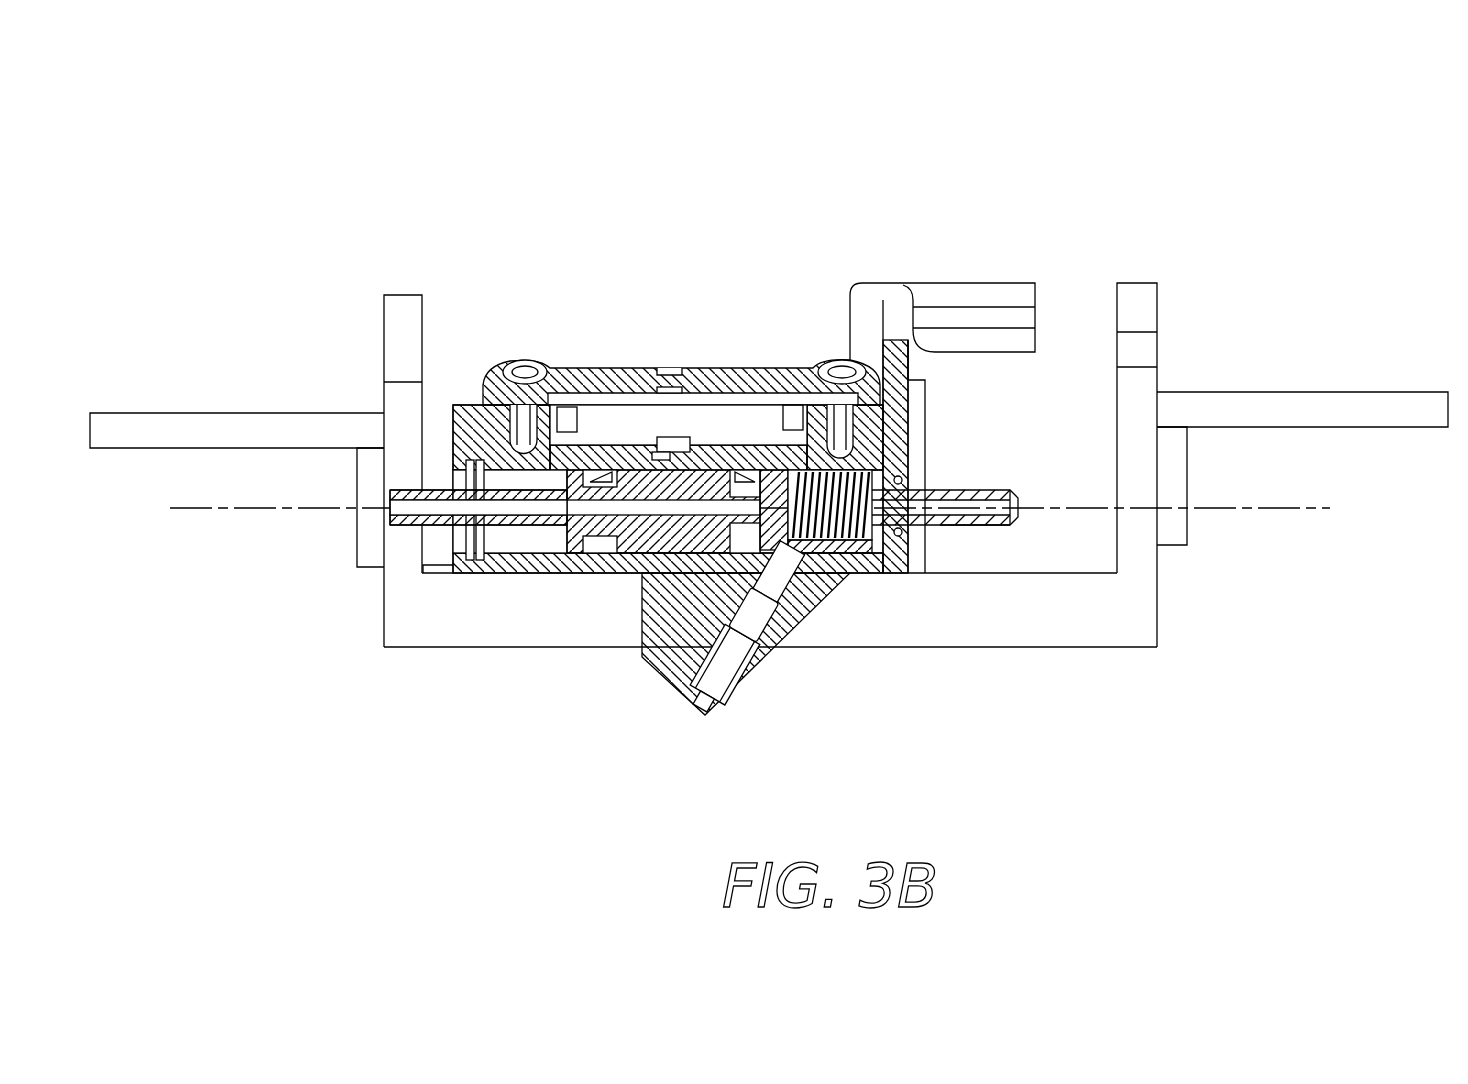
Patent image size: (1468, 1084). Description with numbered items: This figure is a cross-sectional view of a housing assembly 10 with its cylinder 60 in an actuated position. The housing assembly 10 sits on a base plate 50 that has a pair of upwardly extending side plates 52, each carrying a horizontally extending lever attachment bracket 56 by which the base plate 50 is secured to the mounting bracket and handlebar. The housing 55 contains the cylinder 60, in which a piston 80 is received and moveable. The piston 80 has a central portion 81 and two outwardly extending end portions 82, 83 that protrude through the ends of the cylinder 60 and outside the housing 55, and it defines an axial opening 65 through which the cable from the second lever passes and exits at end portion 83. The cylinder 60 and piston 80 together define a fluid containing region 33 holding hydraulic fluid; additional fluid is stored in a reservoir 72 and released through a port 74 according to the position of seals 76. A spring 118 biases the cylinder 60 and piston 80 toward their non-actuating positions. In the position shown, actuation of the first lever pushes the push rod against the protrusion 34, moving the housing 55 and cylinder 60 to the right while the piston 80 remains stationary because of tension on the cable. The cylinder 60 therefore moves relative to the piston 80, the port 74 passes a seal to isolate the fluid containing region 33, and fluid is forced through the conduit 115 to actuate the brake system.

The housing assembly 10 is at (930, 210).
The fluid containing region 33 is at (827, 548).
The protrusion 34 is at (998, 300).
The base plate 50 is at (1086, 612).
The side plate 52 is at (402, 320).
The housing 55 is at (893, 318).
The lever attachment bracket 56 is at (199, 433).
The cylinder 60 is at (580, 565).
The opening 65 is at (518, 530).
The reservoir 72 is at (645, 422).
The port 74 is at (686, 438).
The seals 76 is at (597, 468).
The piston 80 is at (977, 490).
The central portion 81 is at (640, 555).
The end portion 82 is at (963, 526).
The end portion 83 is at (405, 527).
The conduit 115 is at (690, 668).
The spring 118 is at (862, 555).